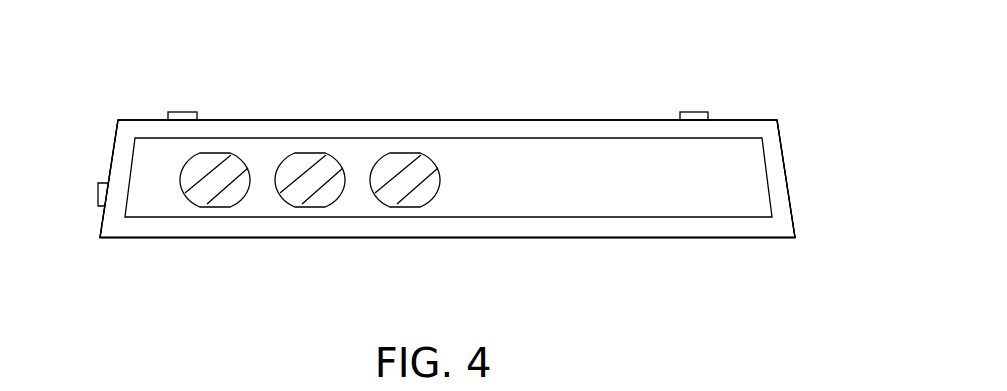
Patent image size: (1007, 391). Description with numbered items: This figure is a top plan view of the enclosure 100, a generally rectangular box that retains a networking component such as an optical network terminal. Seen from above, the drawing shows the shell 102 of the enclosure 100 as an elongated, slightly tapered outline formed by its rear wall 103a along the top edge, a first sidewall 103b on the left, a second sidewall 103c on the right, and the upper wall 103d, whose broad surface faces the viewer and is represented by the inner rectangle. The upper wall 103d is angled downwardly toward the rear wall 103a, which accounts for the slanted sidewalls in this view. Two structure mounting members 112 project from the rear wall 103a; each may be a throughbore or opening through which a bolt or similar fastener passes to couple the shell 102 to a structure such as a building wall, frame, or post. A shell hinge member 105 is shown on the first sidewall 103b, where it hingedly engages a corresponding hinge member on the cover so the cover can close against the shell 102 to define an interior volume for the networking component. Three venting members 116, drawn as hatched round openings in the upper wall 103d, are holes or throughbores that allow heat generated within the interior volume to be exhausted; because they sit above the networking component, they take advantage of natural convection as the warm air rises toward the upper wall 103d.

The enclosure 100 is at (146, 37).
The shell 102 is at (595, 120).
The rear wall 103a is at (520, 120).
The first sidewall 103b is at (117, 140).
The second sidewall 103c is at (787, 175).
The upper wall 103d is at (582, 205).
The shell hinge member 105 is at (98, 197).
The structure mounting member 112 is at (182, 112).
The venting member 116 is at (317, 153).